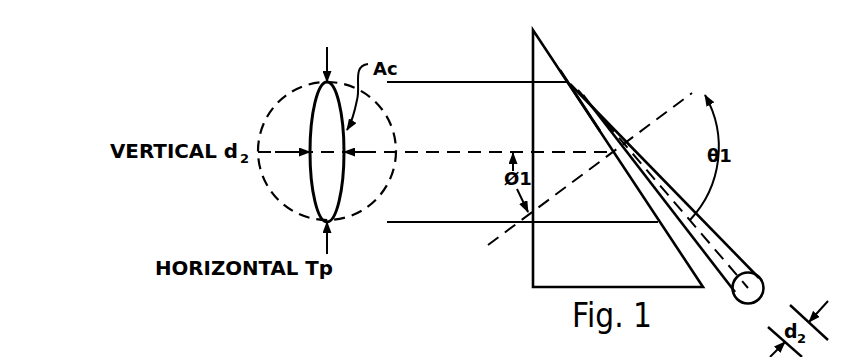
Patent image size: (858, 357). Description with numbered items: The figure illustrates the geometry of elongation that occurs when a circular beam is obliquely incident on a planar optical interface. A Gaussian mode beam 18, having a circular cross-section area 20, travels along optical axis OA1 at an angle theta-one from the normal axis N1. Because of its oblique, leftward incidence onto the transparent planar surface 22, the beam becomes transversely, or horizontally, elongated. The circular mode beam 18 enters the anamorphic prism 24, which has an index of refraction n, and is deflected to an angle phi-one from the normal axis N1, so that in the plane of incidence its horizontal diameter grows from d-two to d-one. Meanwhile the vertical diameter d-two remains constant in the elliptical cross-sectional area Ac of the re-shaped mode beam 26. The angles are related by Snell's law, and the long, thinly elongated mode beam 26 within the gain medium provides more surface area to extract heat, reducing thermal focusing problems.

The Gaussian mode beam 18 is at (716, 229).
The circular cross-section area 20 is at (737, 299).
The transparent planar surface 22 is at (588, 103).
The anamorphic prism 24 is at (600, 266).
The re-shaped mode beam 26 is at (563, 205).
The normal axis N1 is at (700, 90).
The optical axis OA1 is at (709, 250).